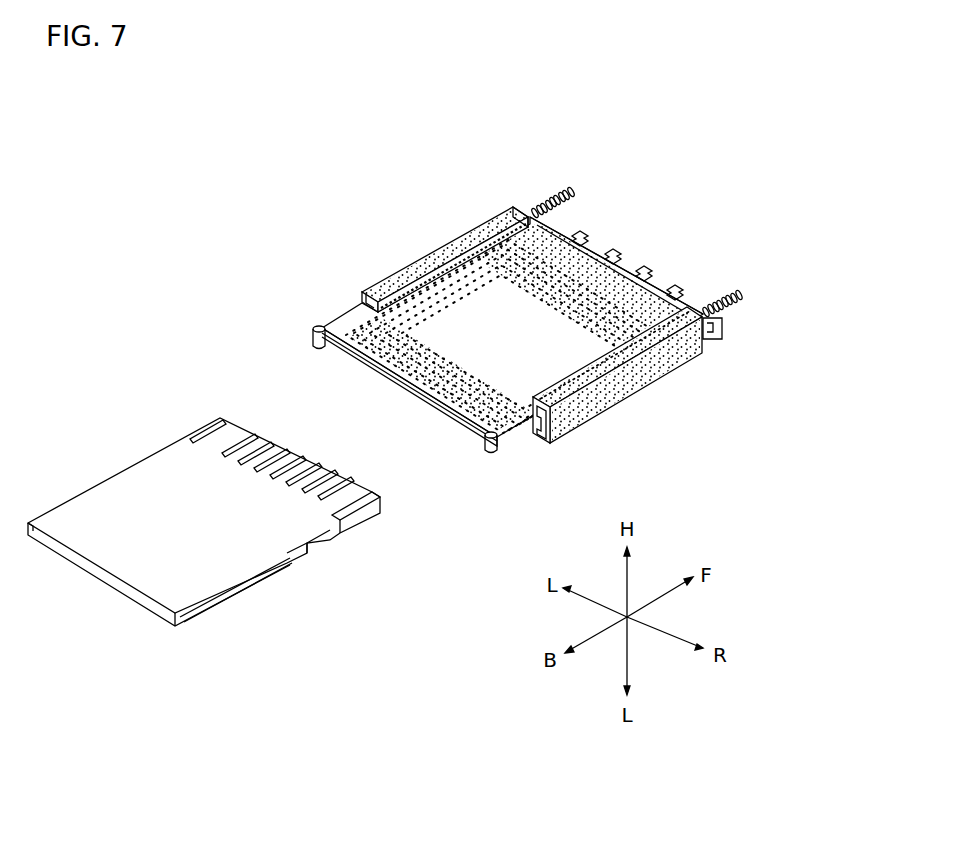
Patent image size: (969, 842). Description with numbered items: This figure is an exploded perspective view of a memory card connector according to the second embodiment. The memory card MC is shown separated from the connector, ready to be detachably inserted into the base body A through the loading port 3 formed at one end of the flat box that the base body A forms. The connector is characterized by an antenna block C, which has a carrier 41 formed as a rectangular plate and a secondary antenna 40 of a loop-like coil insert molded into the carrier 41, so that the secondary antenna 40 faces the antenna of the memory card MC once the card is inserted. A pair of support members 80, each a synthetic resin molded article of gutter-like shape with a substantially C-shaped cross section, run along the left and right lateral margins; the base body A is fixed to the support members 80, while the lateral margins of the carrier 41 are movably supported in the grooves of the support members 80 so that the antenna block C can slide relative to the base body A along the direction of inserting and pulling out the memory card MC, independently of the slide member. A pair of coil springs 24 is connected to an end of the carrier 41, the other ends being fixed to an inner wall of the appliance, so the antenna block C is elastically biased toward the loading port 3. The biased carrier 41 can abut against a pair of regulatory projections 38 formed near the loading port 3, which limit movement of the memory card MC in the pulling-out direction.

The loading port 3 is at (455, 427).
The coil spring 24 is at (557, 193).
The regulatory projection 38 is at (315, 352).
The secondary antenna 40 is at (422, 378).
The carrier 41 is at (357, 348).
The support member 80 is at (437, 247).
The base body A is at (660, 278).
The antenna block C is at (592, 248).
The memory card MC is at (107, 587).